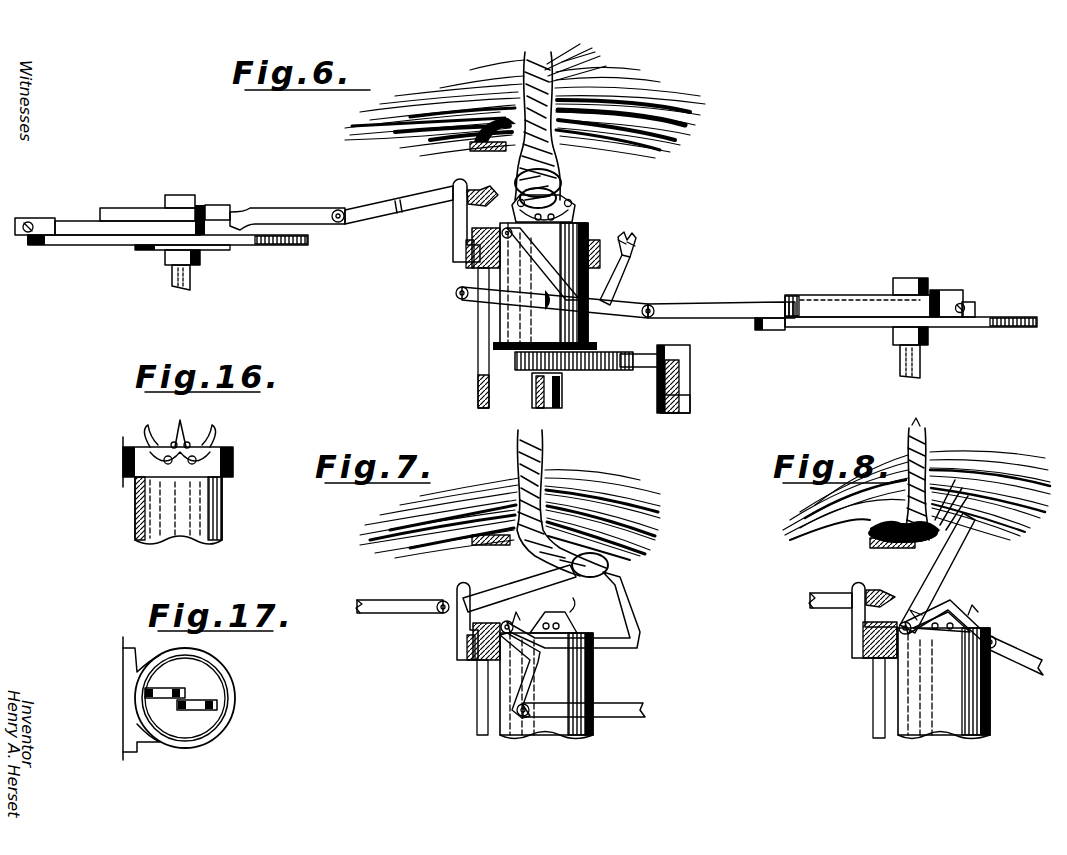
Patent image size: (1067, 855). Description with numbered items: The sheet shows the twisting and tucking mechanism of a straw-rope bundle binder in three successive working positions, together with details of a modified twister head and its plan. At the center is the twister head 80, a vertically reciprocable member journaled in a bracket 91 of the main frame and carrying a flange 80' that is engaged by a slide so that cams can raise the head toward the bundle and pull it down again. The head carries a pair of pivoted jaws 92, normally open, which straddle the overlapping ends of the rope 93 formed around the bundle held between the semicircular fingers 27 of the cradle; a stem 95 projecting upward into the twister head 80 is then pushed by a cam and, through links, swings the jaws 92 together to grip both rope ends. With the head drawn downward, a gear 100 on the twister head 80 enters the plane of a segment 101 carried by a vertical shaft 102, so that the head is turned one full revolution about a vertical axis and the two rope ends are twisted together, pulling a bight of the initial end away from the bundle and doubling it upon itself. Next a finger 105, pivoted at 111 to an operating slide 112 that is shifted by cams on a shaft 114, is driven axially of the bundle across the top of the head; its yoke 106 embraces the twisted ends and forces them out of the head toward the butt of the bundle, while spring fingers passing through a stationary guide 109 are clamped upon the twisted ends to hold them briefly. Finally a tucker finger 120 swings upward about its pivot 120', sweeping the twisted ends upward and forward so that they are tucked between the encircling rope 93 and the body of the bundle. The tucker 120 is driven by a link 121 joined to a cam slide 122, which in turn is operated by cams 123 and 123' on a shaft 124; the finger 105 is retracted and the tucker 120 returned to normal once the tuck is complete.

In FIG. 6, the semicircular fingers 27 is at (473, 152).
In FIG. 8, the semicircular fingers 27 is at (870, 544).
In FIG. 6, the twister head 80 is at (572, 270).
In FIG. 16, the twister head 80 is at (193, 482).
In FIG. 7, the twister head 80 is at (556, 686).
In FIG. 8, the twister head 80 is at (931, 683).
In FIG. 6, the flange 80' is at (566, 336).
In FIG. 17, the bracket 91 is at (233, 696).
In FIG. 7, the pivoted jaws 92 is at (573, 610).
In FIG. 6, the rope 93 is at (553, 190).
In FIG. 6, the stem 95 is at (552, 408).
In FIG. 6, the gear 100 is at (530, 372).
In FIG. 6, the segment 101 is at (647, 362).
In FIG. 6, the vertical shaft 102 is at (678, 413).
In FIG. 6, the finger 105 is at (410, 217).
In FIG. 7, the finger 105 is at (525, 586).
In FIG. 6, the yoke 106 is at (480, 192).
In FIG. 7, the stationary guide 109 is at (461, 618).
In FIG. 8, the stationary guide 109 is at (857, 616).
In FIG. 6, the pivot 111 is at (338, 224).
In FIG. 6, the operating slide 112 is at (86, 228).
In FIG. 6, the shaft 114 is at (174, 278).
In FIG. 6, the tucker finger 120 is at (634, 268).
In FIG. 6, the pivot 120' is at (451, 318).
In FIG. 7, the pivot 120' is at (458, 662).
In FIG. 6, the link 121 is at (480, 297).
In FIG. 6, the cam slide 122 is at (718, 310).
In FIG. 6, the cam 123 is at (896, 339).
In FIG. 6, the cam 123' is at (880, 280).
In FIG. 6, the shaft 124 is at (920, 364).